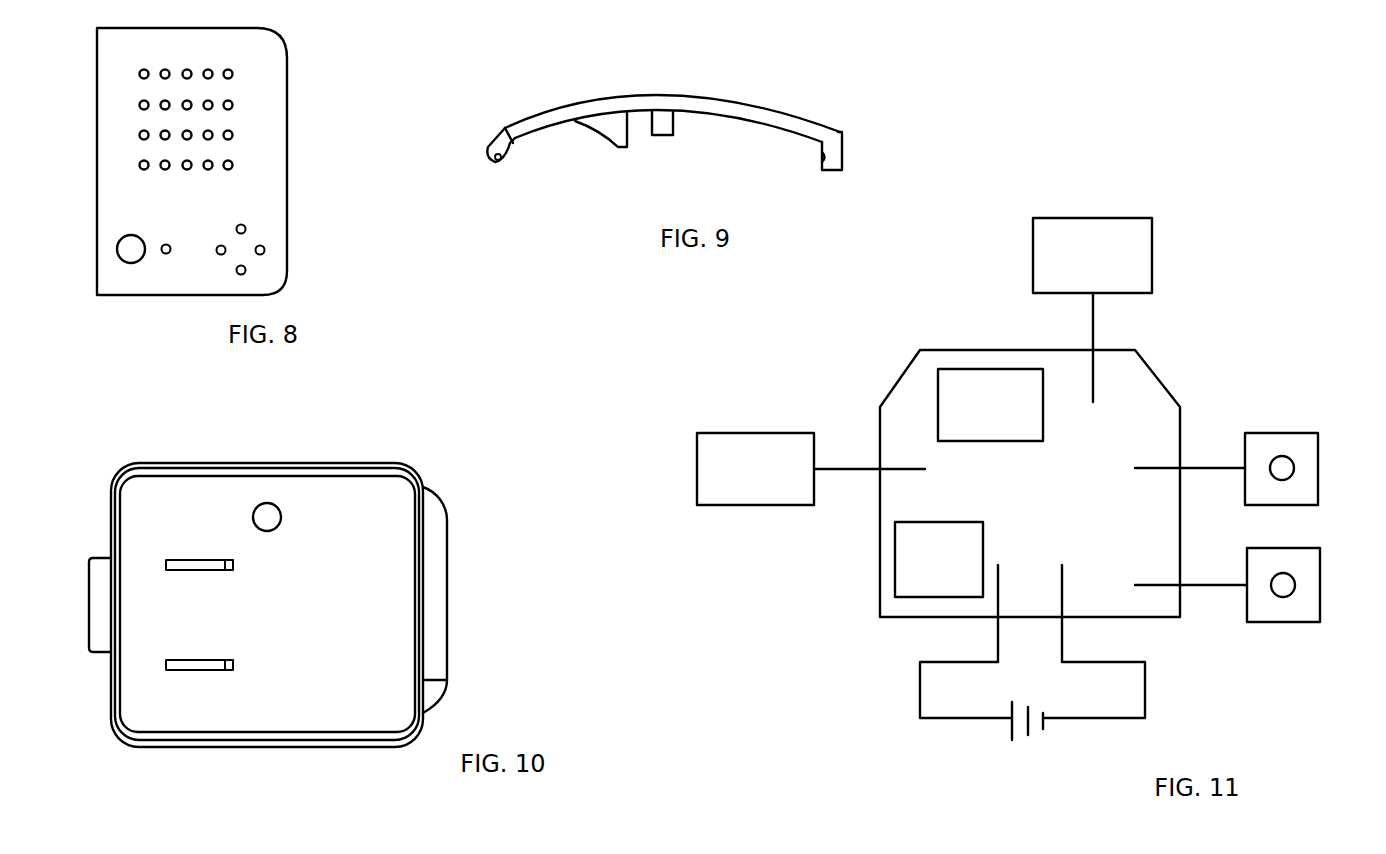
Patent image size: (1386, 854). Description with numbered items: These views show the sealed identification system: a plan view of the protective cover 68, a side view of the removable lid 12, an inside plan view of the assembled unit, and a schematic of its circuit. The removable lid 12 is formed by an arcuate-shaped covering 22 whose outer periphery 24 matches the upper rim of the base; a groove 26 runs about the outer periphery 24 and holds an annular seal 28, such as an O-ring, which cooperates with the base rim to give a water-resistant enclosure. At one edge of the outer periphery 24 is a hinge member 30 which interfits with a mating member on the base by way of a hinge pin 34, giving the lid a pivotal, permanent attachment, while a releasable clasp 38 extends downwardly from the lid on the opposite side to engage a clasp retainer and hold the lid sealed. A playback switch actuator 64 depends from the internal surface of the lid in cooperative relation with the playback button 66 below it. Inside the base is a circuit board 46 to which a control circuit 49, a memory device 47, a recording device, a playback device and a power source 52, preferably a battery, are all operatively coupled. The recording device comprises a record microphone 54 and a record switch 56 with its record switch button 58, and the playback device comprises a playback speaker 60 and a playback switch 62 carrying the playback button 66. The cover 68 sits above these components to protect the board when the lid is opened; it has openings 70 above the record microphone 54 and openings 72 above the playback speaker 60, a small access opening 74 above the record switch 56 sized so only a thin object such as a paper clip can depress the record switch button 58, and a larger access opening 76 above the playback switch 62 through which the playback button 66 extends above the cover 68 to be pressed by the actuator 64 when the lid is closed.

In FIG. 9, the removable lid 12 is at (780, 115).
In FIG. 10, the removable lid 12 is at (372, 720).
In FIG. 9, the arcuate-shaped covering 22 is at (732, 102).
In FIG. 10, the arcuate-shaped covering 22 is at (402, 598).
In FIG. 10, the outer periphery 24 is at (271, 746).
In FIG. 9, the groove 26 is at (508, 130).
In FIG. 10, the groove 26 is at (423, 482).
In FIG. 9, the annular seal 28 is at (515, 140).
In FIG. 10, the annular seal 28 is at (422, 673).
In FIG. 10, the hinge member 30 is at (100, 617).
In FIG. 9, the hinge pin 34 is at (497, 161).
In FIG. 9, the releasable clasp 38 is at (838, 142).
In FIG. 11, the circuit board 46 is at (1135, 378).
In FIG. 11, the memory device 47 is at (990, 368).
In FIG. 11, the control circuit 49 is at (893, 550).
In FIG. 11, the power source 52 is at (1010, 740).
In FIG. 11, the record microphone 54 is at (780, 432).
In FIG. 11, the record switch 56 is at (1308, 470).
In FIG. 11, the record switch button 58 is at (1277, 457).
In FIG. 11, the playback speaker 60 is at (1127, 217).
In FIG. 11, the playback switch 62 is at (1310, 573).
In FIG. 9, the playback switch actuator 64 is at (662, 130).
In FIG. 10, the playback switch actuator 64 is at (267, 503).
In FIG. 11, the playback button 66 is at (1280, 590).
In FIG. 8, the cover 68 is at (273, 133).
In FIG. 8, the opening 70 is at (246, 243).
In FIG. 8, the openings 72 is at (223, 89).
In FIG. 8, the access opening 74 is at (166, 254).
In FIG. 8, the larger access opening 76 is at (131, 258).